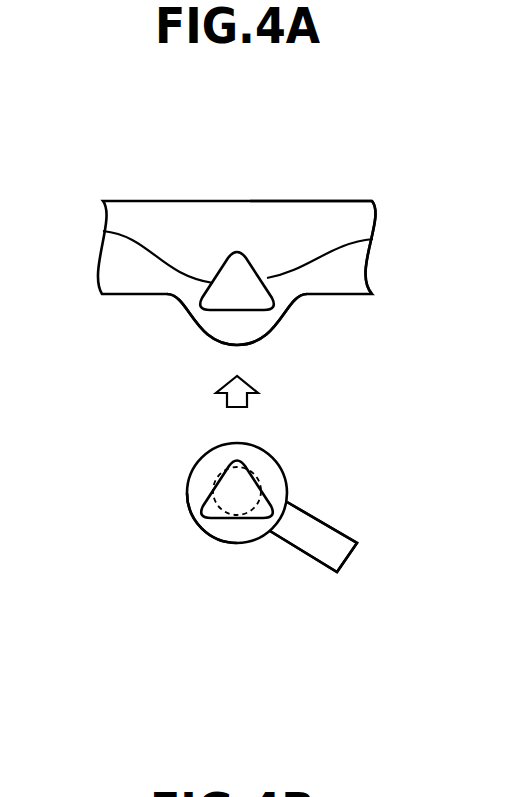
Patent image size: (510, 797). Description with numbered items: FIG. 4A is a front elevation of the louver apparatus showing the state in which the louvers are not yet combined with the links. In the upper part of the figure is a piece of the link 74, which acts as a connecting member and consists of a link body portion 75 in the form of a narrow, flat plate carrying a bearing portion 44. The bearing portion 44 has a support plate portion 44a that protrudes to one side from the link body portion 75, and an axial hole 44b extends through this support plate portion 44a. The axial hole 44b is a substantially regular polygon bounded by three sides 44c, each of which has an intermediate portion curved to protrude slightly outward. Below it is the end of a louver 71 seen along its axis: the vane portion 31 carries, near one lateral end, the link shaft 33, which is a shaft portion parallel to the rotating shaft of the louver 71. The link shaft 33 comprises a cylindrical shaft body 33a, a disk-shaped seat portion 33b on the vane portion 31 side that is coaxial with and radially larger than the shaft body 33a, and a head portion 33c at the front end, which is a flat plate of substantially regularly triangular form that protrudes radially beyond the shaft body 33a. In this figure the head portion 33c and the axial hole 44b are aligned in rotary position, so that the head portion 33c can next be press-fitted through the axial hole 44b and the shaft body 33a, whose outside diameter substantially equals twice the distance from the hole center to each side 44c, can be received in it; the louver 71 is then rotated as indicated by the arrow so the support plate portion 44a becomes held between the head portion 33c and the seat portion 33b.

The vane portion 31 is at (315, 552).
The link shaft 33 is at (260, 480).
The shaft body 33a is at (267, 497).
The seat portion 33b is at (190, 477).
The head portion 33c is at (203, 507).
The bearing portion 44 is at (282, 313).
The support plate portion 44a is at (257, 337).
The axial hole 44b is at (218, 278).
The side 44c is at (103, 231).
The louver 71 is at (333, 532).
The link 74 is at (311, 208).
The link body portion 75 is at (362, 208).